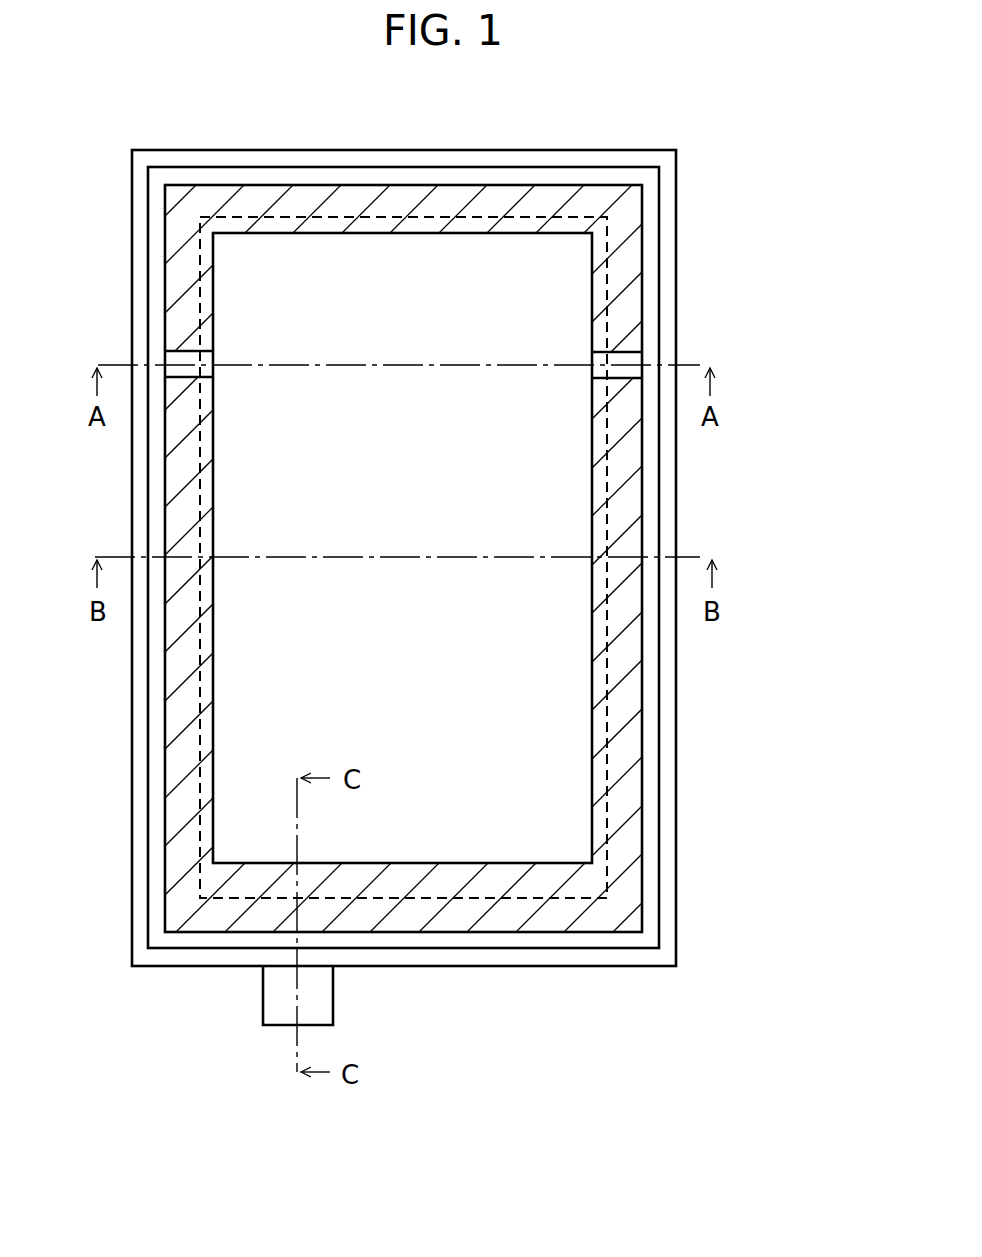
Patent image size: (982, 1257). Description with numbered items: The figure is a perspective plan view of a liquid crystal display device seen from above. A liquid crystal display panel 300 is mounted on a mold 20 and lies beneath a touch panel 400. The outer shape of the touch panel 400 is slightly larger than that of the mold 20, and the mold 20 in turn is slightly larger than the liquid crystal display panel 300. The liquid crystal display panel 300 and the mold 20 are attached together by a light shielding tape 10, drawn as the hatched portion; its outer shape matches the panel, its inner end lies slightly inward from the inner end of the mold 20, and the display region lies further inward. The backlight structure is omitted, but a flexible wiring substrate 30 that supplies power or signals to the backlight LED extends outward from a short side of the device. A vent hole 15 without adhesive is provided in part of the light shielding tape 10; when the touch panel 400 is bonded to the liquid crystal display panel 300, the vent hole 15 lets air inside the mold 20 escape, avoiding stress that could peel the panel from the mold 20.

The touch panel 400 is at (676, 162).
The mold 20 is at (659, 223).
The liquid crystal display panel 300 is at (642, 298).
The light shielding tape 10 is at (594, 512).
The vent hole 15 is at (180, 357).
The flexible wiring substrate 30 is at (333, 990).